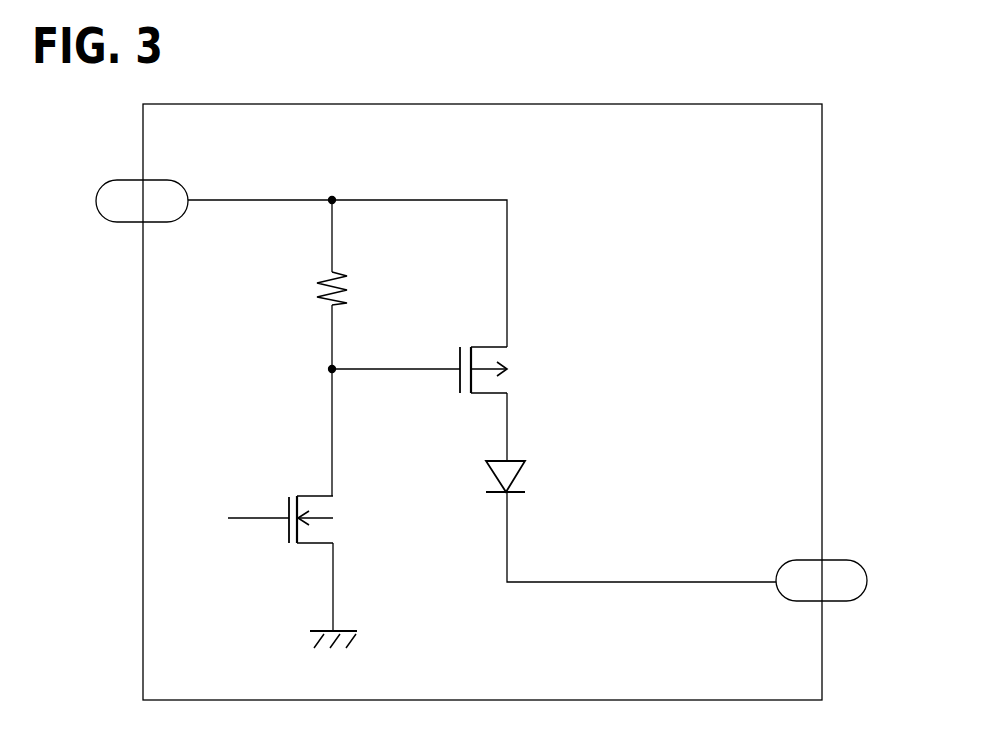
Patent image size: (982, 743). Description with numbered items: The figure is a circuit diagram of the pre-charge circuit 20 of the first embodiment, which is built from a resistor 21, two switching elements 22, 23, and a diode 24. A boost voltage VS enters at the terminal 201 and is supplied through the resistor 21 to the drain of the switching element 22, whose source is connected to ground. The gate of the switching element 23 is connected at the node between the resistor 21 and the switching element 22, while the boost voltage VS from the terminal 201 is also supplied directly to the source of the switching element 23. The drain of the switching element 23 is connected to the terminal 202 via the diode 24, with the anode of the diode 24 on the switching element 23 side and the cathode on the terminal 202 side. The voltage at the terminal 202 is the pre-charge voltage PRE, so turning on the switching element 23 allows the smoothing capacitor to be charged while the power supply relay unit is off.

The pre-charge circuit 20 is at (762, 103).
The terminal 201 is at (104, 179).
The terminal 202 is at (861, 559).
The resistor 21 is at (322, 273).
The switching element 22 is at (308, 495).
The switching element 23 is at (486, 346).
The diode 24 is at (519, 470).